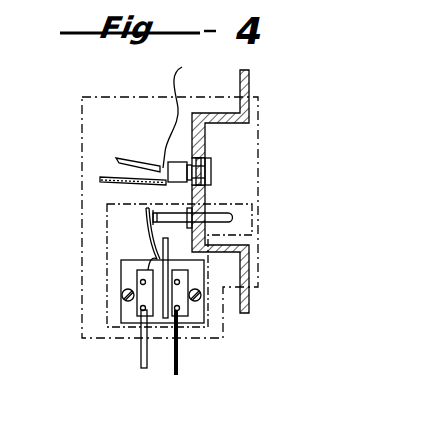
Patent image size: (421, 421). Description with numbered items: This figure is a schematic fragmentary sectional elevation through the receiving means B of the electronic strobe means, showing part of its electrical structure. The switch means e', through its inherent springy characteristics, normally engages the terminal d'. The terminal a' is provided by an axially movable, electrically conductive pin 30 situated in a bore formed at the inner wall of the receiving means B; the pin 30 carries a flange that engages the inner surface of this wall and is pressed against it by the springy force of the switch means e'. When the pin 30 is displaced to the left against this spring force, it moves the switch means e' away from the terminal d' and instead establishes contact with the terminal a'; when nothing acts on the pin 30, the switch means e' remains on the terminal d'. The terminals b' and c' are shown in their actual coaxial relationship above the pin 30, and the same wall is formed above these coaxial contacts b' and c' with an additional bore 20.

The additional bore 20 is at (205, 138).
The axially movable pin 30 is at (220, 223).
The receiving means B is at (82, 130).
The terminal a' is at (225, 221).
The terminal b' is at (204, 171).
The terminal c' is at (177, 113).
The terminal d' is at (202, 346).
The switch means e' is at (127, 346).